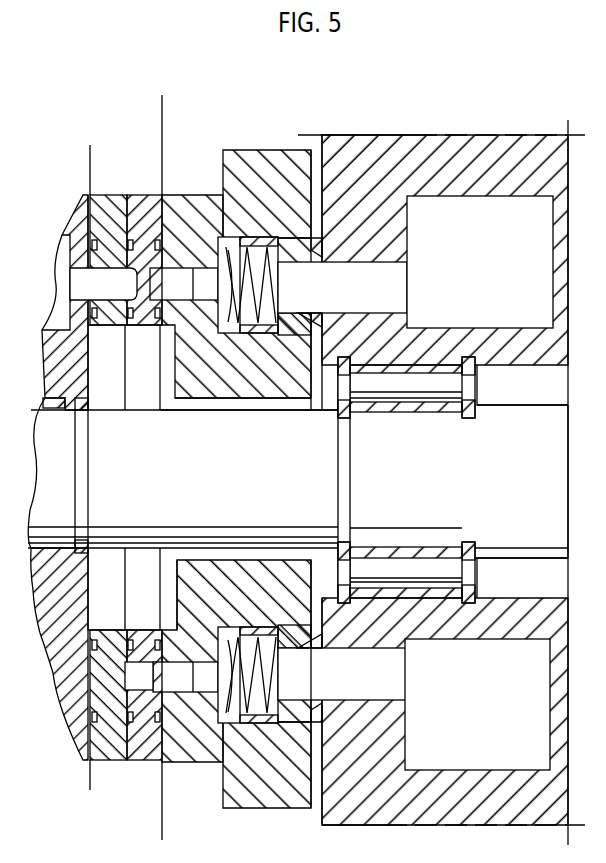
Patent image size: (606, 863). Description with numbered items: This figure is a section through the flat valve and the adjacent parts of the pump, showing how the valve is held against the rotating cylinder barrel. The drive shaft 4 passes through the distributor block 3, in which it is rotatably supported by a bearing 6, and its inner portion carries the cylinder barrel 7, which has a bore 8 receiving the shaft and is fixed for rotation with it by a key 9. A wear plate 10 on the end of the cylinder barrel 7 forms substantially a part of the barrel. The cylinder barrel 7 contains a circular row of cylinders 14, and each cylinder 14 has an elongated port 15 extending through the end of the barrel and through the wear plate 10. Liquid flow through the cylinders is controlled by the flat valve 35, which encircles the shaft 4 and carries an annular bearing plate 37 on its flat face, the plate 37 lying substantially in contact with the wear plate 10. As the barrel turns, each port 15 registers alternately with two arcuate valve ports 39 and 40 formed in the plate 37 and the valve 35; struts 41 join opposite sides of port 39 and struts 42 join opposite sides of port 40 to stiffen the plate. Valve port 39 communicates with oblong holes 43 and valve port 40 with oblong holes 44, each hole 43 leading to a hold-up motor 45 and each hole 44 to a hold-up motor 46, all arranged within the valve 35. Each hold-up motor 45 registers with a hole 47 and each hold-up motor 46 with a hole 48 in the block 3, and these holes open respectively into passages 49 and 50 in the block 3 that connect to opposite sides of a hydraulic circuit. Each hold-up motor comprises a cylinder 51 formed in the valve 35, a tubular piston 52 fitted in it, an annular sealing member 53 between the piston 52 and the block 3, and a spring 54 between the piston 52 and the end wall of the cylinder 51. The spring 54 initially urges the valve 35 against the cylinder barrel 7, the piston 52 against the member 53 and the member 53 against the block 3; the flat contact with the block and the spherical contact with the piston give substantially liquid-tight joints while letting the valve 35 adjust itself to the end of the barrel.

The distributor block 3 is at (560, 700).
The drive shaft 4 is at (224, 477).
The bearing 6 is at (413, 397).
The cylinder barrel 7 is at (45, 629).
The bore 8 is at (171, 104).
The key 9 is at (43, 402).
The wear plate 10 is at (103, 400).
The cylinder 14 is at (57, 320).
The port 15 is at (98, 285).
The flat valve 35 is at (277, 393).
The annular bearing plate 37 is at (147, 557).
The valve port 39 is at (135, 296).
The valve port 40 is at (171, 680).
The strut 41 is at (132, 285).
The strut 42 is at (145, 673).
The oblong hole 43 is at (203, 278).
The oblong hole 44 is at (206, 690).
The hold-up motor 45 is at (293, 214).
The hold-up motor 46 is at (287, 748).
The hole 47 is at (400, 294).
The hole 48 is at (397, 696).
The passage 49 is at (497, 262).
The passage 50 is at (507, 694).
The cylinder 51 is at (241, 238).
The tubular piston 52 is at (272, 334).
The annular sealing member 53 is at (316, 322).
The spring 54 is at (229, 322).